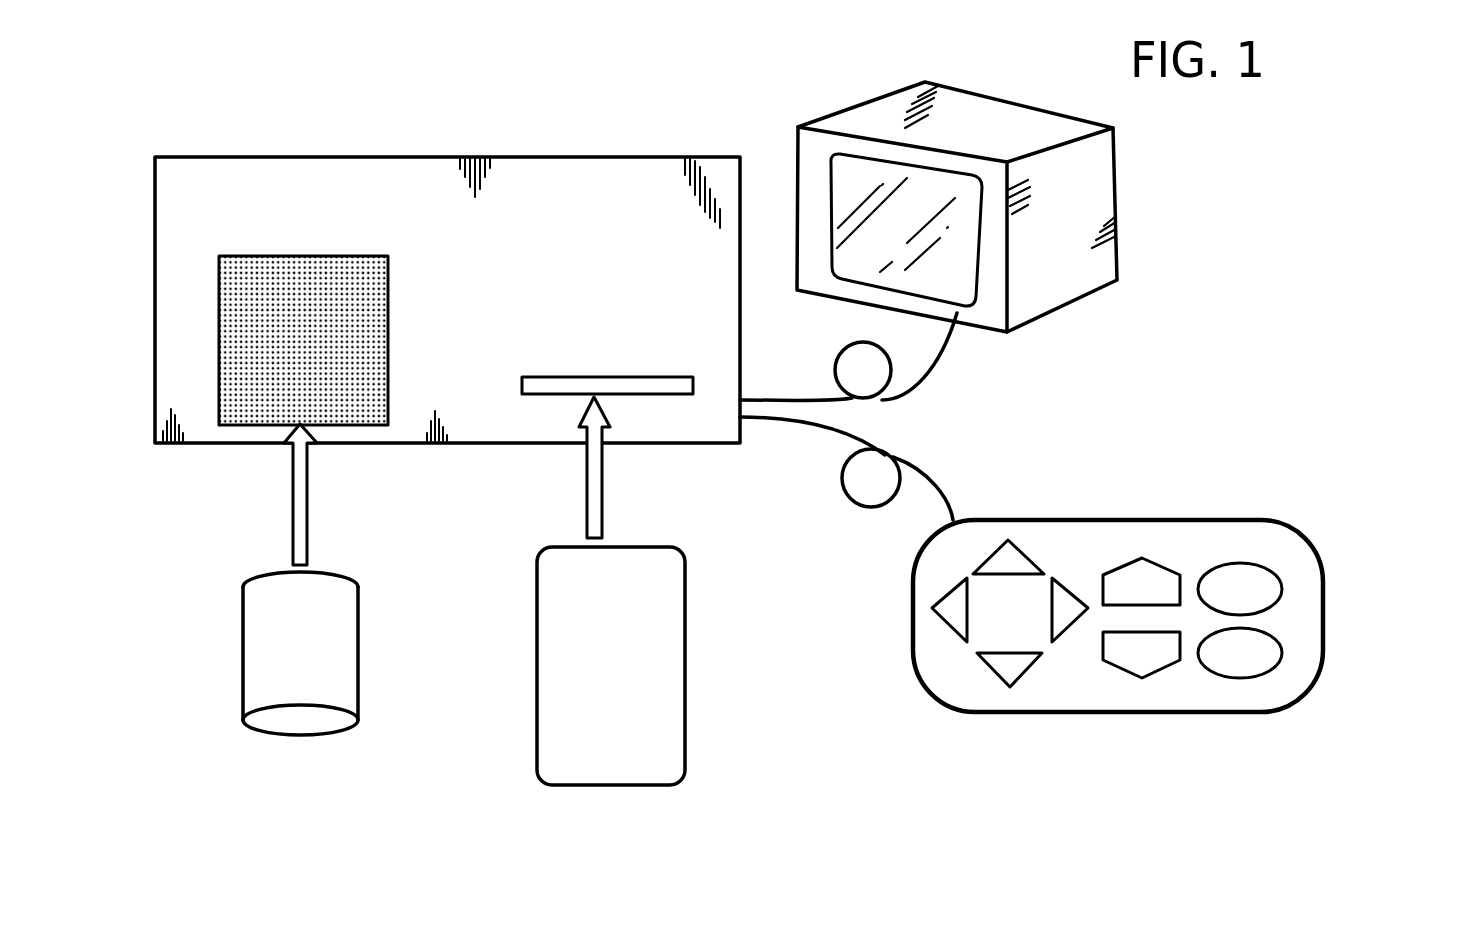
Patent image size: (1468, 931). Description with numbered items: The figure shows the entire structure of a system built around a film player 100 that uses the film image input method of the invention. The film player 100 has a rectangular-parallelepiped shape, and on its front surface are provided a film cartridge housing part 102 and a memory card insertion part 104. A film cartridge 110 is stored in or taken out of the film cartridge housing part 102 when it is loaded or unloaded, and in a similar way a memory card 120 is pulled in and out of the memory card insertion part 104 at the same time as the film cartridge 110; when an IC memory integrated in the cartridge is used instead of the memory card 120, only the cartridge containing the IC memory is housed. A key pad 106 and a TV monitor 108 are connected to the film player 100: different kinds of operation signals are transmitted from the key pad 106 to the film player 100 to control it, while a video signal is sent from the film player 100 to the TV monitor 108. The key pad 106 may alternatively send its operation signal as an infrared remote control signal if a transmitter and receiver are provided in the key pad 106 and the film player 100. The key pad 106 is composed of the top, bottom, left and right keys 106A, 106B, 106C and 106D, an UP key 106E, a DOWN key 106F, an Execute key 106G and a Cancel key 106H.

The film player 100 is at (598, 79).
The film cartridge housing part 102 is at (243, 415).
The memory card insertion part 104 is at (640, 393).
The key pad 106 is at (1103, 520).
The top key 106A is at (1030, 562).
The bottom key 106B is at (985, 662).
The left key 106C is at (963, 635).
The right key 106D is at (1067, 640).
The "UP" key 106E is at (1155, 563).
The "DOWN" key 106F is at (1150, 677).
The "Execute" key 106G is at (1282, 587).
The "Cancel" key 106H is at (1282, 653).
The TV monitor 108 is at (853, 118).
The film cartridge 110 is at (358, 622).
The memory card 120 is at (685, 637).